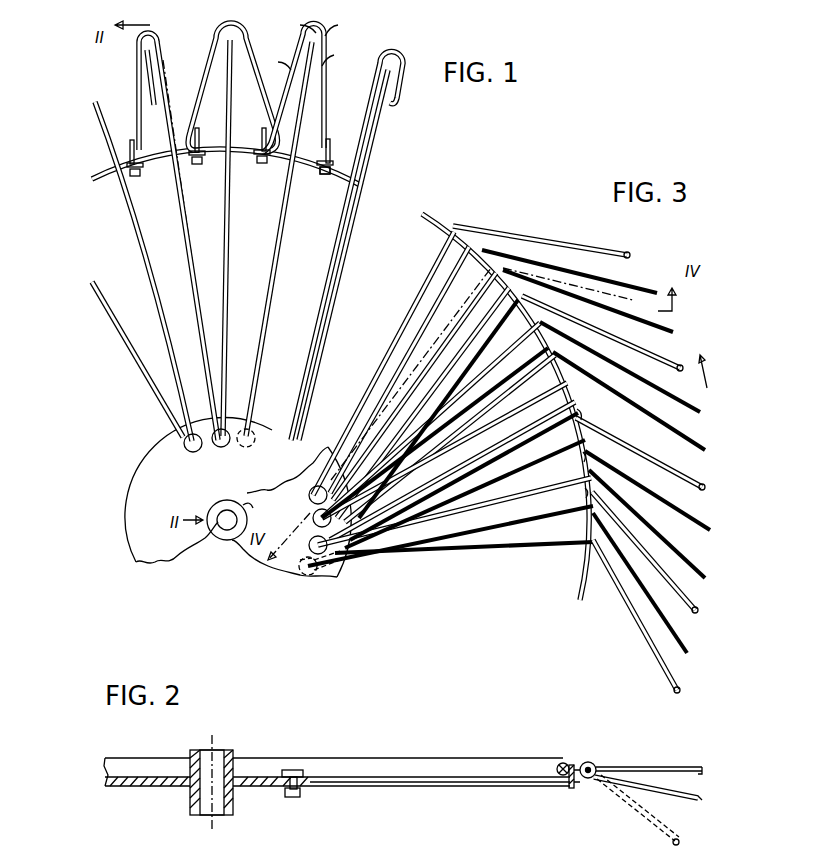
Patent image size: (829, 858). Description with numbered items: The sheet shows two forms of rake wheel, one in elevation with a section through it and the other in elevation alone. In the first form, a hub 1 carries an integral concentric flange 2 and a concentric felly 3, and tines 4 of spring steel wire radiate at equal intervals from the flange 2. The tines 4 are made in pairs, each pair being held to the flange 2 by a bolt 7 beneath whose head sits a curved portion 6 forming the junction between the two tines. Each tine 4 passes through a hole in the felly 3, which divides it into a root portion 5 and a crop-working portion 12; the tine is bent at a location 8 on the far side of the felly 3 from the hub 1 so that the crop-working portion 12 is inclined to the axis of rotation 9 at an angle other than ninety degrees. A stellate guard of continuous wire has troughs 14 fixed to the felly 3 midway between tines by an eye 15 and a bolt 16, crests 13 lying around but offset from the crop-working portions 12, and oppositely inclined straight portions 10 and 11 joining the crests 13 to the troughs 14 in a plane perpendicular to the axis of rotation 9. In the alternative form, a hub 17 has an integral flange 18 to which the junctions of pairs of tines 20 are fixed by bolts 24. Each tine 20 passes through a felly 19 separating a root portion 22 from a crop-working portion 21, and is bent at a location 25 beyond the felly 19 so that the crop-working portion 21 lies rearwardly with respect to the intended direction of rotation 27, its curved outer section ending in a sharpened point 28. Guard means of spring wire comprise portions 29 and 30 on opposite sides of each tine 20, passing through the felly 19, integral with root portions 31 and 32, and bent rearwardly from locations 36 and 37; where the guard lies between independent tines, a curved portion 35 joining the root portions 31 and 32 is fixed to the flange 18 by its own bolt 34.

In FIG. 1, the hub 1 is at (213, 511).
In FIG. 2, the hub 1 is at (190, 752).
In FIG. 1, the flange 2 is at (135, 492).
In FIG. 2, the flange 2 is at (170, 788).
In FIG. 1, the felly 3 is at (136, 182).
In FIG. 2, the felly 3 is at (570, 788).
In FIG. 1, the tine 4 is at (150, 100).
In FIG. 2, the tine 4 is at (666, 802).
In FIG. 1, the root portion 5 is at (182, 240).
In FIG. 2, the root portion 5 is at (408, 786).
In FIG. 1, the curved portion 6 is at (245, 448).
In FIG. 2, the curved portion 6 is at (288, 768).
In FIG. 1, the bolt 7 is at (196, 452).
In FIG. 2, the bolt 7 is at (294, 797).
In FIG. 1, the bending location 8 is at (360, 175).
In FIG. 2, the bending location 8 is at (583, 786).
In FIG. 2, the axis of rotation 9 is at (215, 740).
In FIG. 1, the inclined straight portion 10 is at (337, 54).
In FIG. 2, the inclined straight portion 10 is at (626, 815).
In FIG. 1, the inclined straight portion 11 is at (279, 61).
In FIG. 2, the inclined straight portion 11 is at (646, 765).
In FIG. 1, the crop-working portion 12 is at (339, 24).
In FIG. 2, the crop-working portion 12 is at (699, 799).
In FIG. 1, the crest 13 is at (298, 23).
In FIG. 2, the crest 13 is at (702, 765).
In FIG. 1, the trough 14 is at (264, 128).
In FIG. 1, the eye 15 is at (328, 138).
In FIG. 2, the eye 15 is at (588, 762).
In FIG. 1, the bolt 16 is at (321, 178).
In FIG. 2, the bolt 16 is at (560, 763).
In FIG. 1, the hub 17 is at (248, 512).
In FIG. 3, the flange 18 is at (293, 483).
In FIG. 3, the felly 19 is at (447, 222).
In FIG. 3, the tine 20 is at (538, 238).
In FIG. 3, the crop-working portion 21 is at (630, 253).
In FIG. 3, the root portion 22 is at (372, 378).
In FIG. 3, the bolt 24 is at (315, 548).
In FIG. 3, the bending location 25 is at (585, 492).
In FIG. 3, the intended direction of rotation 27 is at (707, 388).
In FIG. 3, the point 28 is at (705, 490).
In FIG. 3, the guard portion 29 is at (707, 450).
In FIG. 3, the guard portion 30 is at (640, 466).
In FIG. 3, the root portion 31 is at (534, 460).
In FIG. 3, the root portion 32 is at (530, 437).
In FIG. 3, the bolt 34 is at (304, 565).
In FIG. 3, the curved portion 35 is at (307, 576).
In FIG. 3, the bending location 36 is at (583, 460).
In FIG. 3, the bending location 37 is at (582, 405).